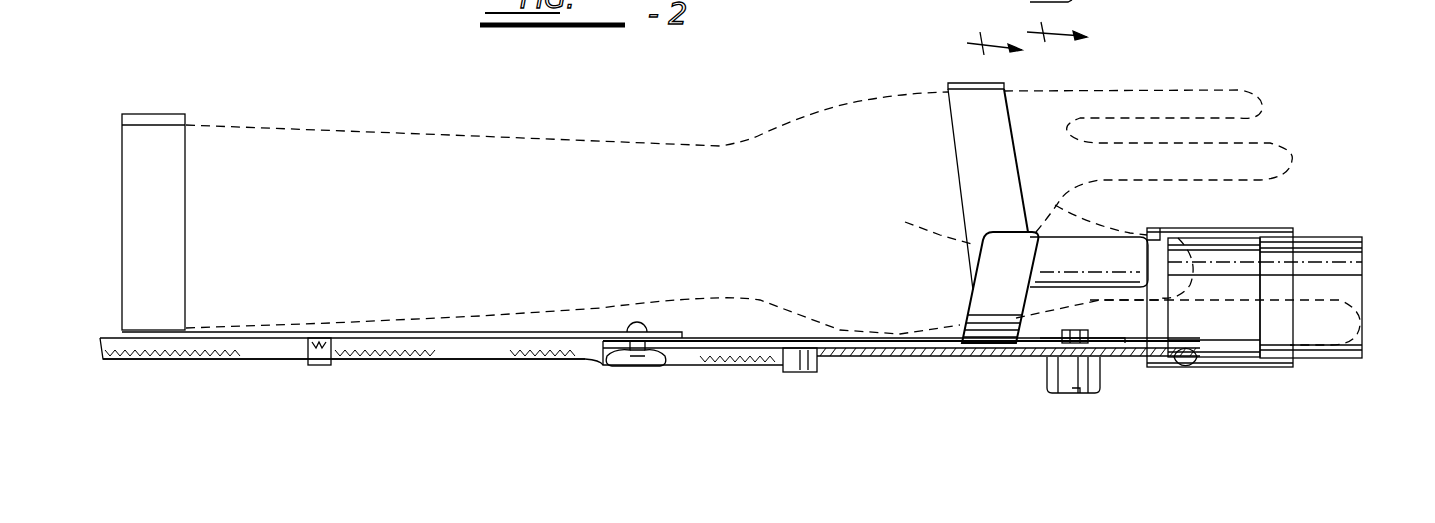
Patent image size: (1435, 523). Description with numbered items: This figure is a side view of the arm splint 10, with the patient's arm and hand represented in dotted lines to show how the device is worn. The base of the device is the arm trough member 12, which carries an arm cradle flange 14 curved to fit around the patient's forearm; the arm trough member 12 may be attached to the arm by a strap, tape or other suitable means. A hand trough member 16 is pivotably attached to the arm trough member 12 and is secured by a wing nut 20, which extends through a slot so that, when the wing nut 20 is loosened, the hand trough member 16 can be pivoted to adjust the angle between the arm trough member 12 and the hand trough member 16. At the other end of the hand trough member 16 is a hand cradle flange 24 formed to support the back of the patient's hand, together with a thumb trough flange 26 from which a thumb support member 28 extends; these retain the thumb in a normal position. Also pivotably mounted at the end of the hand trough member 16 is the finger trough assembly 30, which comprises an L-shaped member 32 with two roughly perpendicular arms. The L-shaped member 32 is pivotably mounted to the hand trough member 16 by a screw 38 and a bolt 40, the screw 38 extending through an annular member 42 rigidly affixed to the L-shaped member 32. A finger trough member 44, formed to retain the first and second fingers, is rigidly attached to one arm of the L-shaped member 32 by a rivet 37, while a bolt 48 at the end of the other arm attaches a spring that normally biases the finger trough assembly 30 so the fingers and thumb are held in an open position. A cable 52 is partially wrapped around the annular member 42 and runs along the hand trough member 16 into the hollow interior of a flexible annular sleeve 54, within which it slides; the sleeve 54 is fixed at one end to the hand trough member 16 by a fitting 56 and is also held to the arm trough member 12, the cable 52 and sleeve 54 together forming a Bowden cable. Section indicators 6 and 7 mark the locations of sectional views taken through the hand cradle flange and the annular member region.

The arm splint 10 is at (969, 369).
The arm trough member 12 is at (388, 332).
The arm cradle flange 14 is at (160, 113).
The hand trough member 16 is at (866, 340).
The wing nut 20 is at (648, 366).
The hand cradle flange 24 is at (948, 84).
The thumb trough flange 26 is at (1013, 232).
The thumb support member 28 is at (1063, 237).
The finger trough assembly 30 is at (1222, 368).
The L-shaped member 32 is at (1038, 343).
The rivet 37 is at (1185, 372).
The screw 38 is at (1092, 395).
The bolt 40 is at (1088, 334).
The annular member 42 is at (1045, 375).
The finger trough member 44 is at (1280, 368).
The bolt 48 is at (1070, 3).
The cable 52 is at (920, 358).
The flexible annular sleeve 54 is at (495, 350).
The fitting 56 is at (795, 372).
The section line 6 is at (992, 46).
The section line 7 is at (1057, 36).